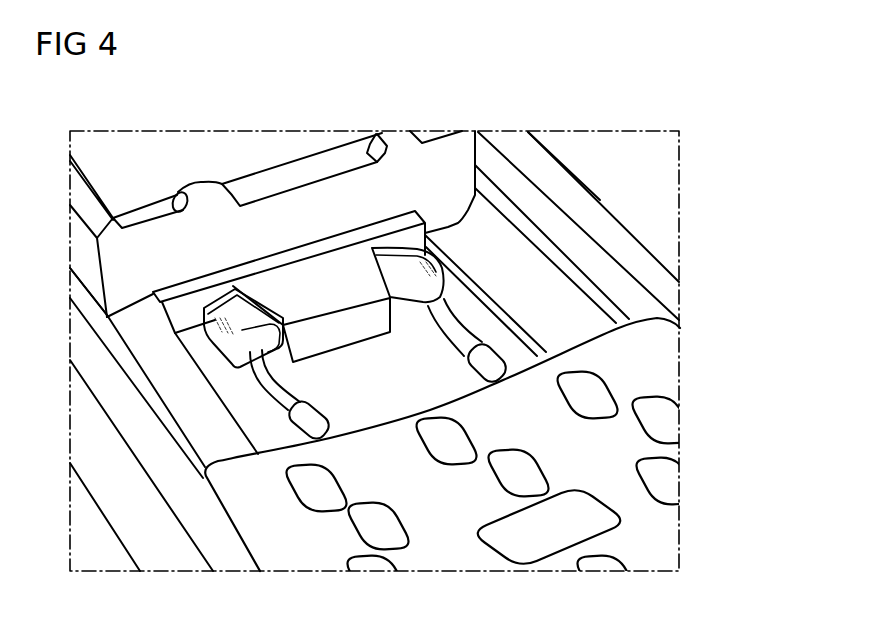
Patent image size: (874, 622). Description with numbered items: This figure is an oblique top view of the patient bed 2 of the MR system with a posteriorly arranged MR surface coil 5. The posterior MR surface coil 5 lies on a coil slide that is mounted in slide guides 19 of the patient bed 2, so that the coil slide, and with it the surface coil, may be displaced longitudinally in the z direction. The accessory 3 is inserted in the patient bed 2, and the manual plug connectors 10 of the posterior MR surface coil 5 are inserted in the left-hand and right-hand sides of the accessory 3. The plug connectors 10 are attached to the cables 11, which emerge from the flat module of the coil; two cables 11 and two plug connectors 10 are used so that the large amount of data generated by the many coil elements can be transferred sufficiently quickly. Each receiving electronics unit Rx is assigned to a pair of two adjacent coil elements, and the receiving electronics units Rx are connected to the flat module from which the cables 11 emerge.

The patient bed 2 is at (195, 146).
The accessory 3 is at (313, 283).
The manual plug connector 10 is at (394, 270).
The cable 11 is at (447, 336).
The slide guide 19 is at (540, 240).
The MR surface coil 5 is at (657, 353).
The receiving electronics unit Rx is at (665, 425).